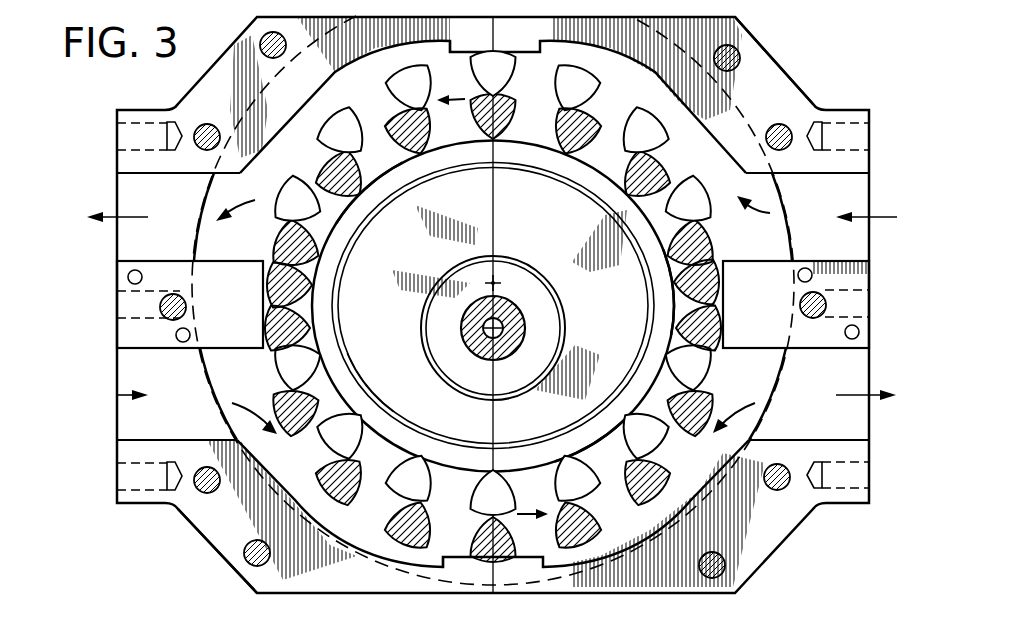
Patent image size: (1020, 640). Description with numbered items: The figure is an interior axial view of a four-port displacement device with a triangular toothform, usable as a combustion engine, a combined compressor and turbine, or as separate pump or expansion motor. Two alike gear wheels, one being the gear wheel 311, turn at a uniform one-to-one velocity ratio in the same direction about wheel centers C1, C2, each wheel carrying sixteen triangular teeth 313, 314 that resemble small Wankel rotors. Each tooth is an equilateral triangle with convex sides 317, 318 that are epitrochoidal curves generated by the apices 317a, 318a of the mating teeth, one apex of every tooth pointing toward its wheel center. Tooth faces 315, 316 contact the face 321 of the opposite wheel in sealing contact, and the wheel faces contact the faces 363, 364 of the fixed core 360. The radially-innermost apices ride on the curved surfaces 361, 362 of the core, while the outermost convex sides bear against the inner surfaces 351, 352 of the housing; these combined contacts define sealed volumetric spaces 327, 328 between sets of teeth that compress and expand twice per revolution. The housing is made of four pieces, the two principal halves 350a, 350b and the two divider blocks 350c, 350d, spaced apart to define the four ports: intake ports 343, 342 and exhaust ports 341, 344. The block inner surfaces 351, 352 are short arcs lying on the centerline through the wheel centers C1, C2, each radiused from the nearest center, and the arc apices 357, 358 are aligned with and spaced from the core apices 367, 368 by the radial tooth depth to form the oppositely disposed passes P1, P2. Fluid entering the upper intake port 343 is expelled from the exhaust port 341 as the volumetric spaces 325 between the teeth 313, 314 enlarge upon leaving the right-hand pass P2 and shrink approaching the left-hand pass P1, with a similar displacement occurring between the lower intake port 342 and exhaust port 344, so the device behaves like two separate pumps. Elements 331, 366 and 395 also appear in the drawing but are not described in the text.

The gear wheel 311 is at (700, 465).
The triangular teeth 313 is at (428, 88).
The triangular teeth 314 is at (428, 132).
The tooth face 315 is at (574, 66).
The tooth face 316 is at (562, 126).
The convex side of tooth 317 is at (276, 367).
The tooth apex 317a is at (328, 436).
The convex side of tooth 318 is at (275, 400).
The tooth apex 318a is at (345, 503).
The wheel face 321 is at (772, 236).
The volumetric space 325 is at (662, 272).
The sealed volumetric space 327 is at (545, 93).
The sealed volumetric space 328 is at (466, 535).
The chamber region 331 is at (805, 421).
The exhaust port 341 is at (125, 188).
The lower intake port 342 is at (125, 412).
The upper intake port 343 is at (860, 190).
The exhaust port 344 is at (860, 371).
The principal housing half 350a is at (770, 51).
The principal housing half 350b is at (210, 545).
The divider block 350c is at (117, 333).
The divider block 350d is at (869, 277).
The housing inner surface 351 is at (452, 54).
The housing inner surface 352 is at (258, 348).
The arc apex of divider block 357 is at (267, 303).
The arc apex of divider block 358 is at (720, 300).
The fixed core 360 is at (440, 240).
The curved surface of core 361 is at (391, 182).
The curved surface of core 362 is at (593, 440).
The core face 363 is at (370, 407).
The core face 364 is at (408, 442).
The shaft hub 366 is at (463, 352).
The core apex 367 is at (289, 285).
The core apex 368 is at (696, 281).
The bolt hole 395 is at (735, 67).
The wheel center C1 is at (496, 280).
The wheel center C2 is at (490, 328).
The left-hand pass P1 is at (321, 310).
The right-hand pass P2 is at (654, 313).